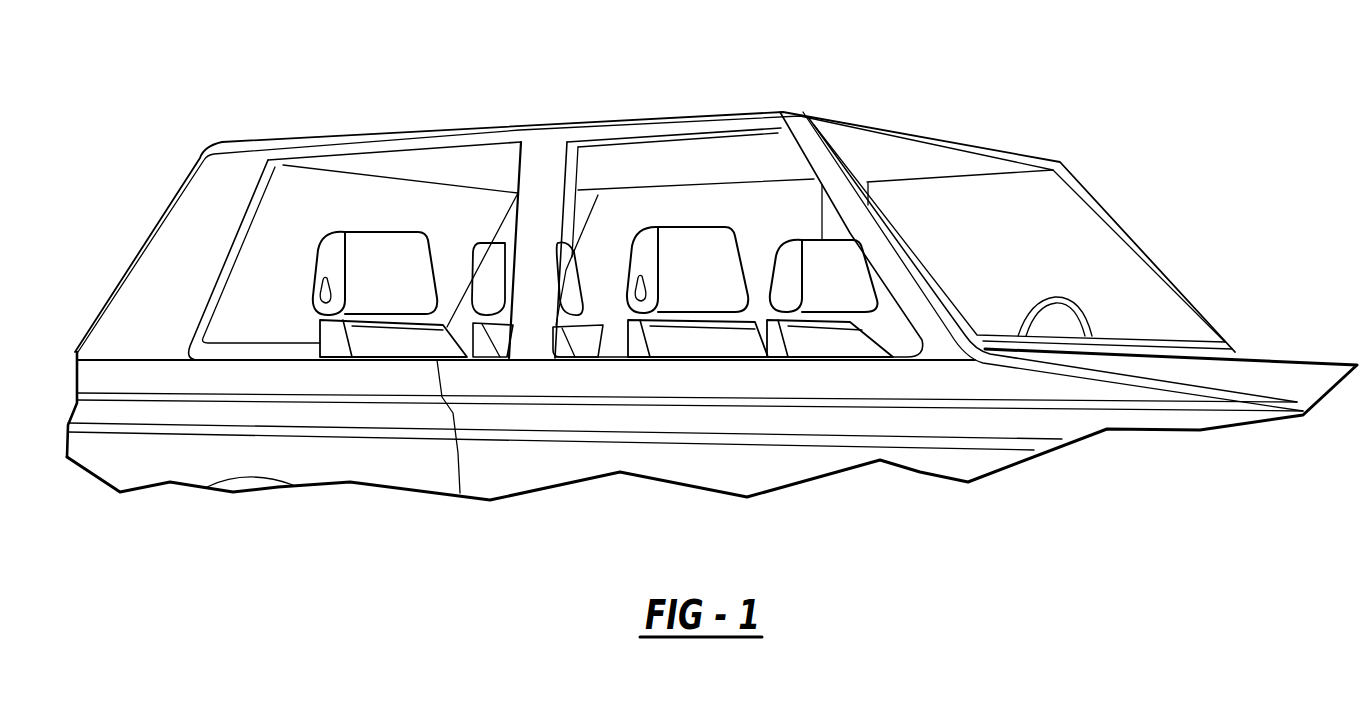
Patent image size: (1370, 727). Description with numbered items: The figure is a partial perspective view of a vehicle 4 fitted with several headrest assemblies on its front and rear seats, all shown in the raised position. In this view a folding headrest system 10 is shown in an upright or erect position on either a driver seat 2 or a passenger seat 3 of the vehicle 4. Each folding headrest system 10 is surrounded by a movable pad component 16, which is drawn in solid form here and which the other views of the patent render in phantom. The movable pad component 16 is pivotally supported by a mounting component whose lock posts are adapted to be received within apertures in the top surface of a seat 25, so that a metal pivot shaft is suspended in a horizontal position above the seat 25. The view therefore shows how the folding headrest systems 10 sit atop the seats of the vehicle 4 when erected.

The driver seat 2 is at (837, 343).
The passenger seat 3 is at (328, 337).
The vehicle 4 is at (1102, 387).
The folding headrest system 10 is at (322, 236).
The movable pad component 16 is at (395, 255).
The seat 25 is at (392, 337).